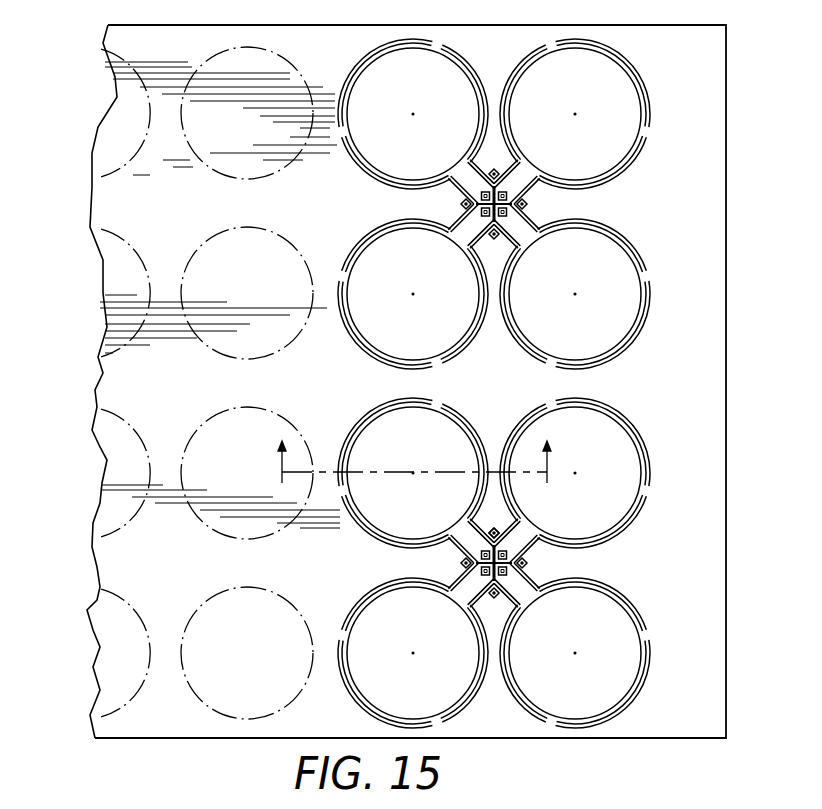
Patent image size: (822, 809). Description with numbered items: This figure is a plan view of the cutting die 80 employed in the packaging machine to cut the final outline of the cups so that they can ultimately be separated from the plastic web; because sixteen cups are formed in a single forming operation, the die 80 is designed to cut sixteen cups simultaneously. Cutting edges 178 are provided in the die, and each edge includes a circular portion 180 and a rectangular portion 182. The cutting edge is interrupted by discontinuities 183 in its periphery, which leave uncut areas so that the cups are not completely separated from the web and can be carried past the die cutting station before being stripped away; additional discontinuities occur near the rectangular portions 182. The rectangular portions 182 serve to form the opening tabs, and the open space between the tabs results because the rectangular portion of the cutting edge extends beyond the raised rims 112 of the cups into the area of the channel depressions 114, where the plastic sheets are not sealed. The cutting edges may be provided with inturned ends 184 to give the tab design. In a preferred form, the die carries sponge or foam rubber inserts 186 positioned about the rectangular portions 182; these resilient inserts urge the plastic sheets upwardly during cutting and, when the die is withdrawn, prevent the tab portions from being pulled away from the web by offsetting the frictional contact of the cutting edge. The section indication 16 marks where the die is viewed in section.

The die 80 is at (98, 564).
The raised rims 112 is at (343, 664).
The channels 114 is at (490, 492).
The cutting edges 178 is at (363, 533).
The circular portion 180 is at (428, 577).
The rectangular portion 182 is at (528, 577).
The discontinuities 183 is at (496, 544).
The inturned ends 184 is at (506, 582).
The sponge or foam rubber inserts 186 is at (489, 531).
The section line 16- 16 is at (413, 462).